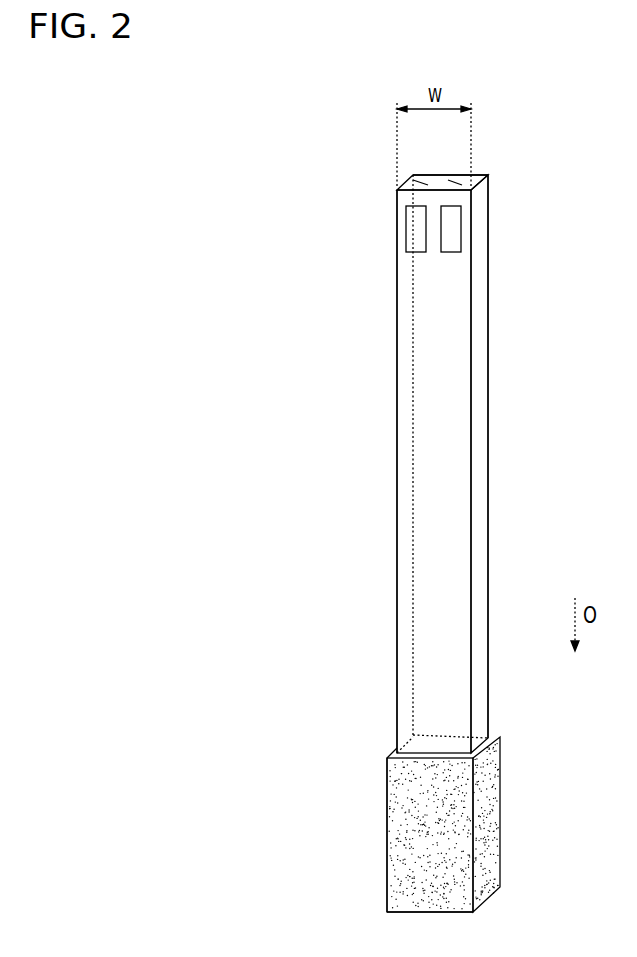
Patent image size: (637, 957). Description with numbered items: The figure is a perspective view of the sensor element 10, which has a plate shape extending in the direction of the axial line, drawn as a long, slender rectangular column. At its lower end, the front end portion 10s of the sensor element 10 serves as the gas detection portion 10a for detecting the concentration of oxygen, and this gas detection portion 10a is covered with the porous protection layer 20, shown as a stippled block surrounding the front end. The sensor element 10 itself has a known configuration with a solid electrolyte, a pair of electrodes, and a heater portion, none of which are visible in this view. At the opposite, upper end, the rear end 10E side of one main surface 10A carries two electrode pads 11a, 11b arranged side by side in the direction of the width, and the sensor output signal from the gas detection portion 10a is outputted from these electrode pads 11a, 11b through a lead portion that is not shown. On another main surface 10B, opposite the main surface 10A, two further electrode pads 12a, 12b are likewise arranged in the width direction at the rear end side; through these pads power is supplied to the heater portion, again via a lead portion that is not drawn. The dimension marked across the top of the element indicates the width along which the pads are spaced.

The sensor element 10 is at (541, 471).
The main surface 10A is at (425, 503).
The another main surface 10B is at (453, 375).
The rear end 10E is at (482, 215).
The front end portion 10s is at (386, 822).
The gas detection portion 10a is at (379, 869).
The electrode pad 11a is at (462, 232).
The electrode pad 11b is at (410, 228).
The electrode pad 12a is at (458, 186).
The electrode pad 12b is at (425, 186).
The porous protection layer 20 is at (502, 812).